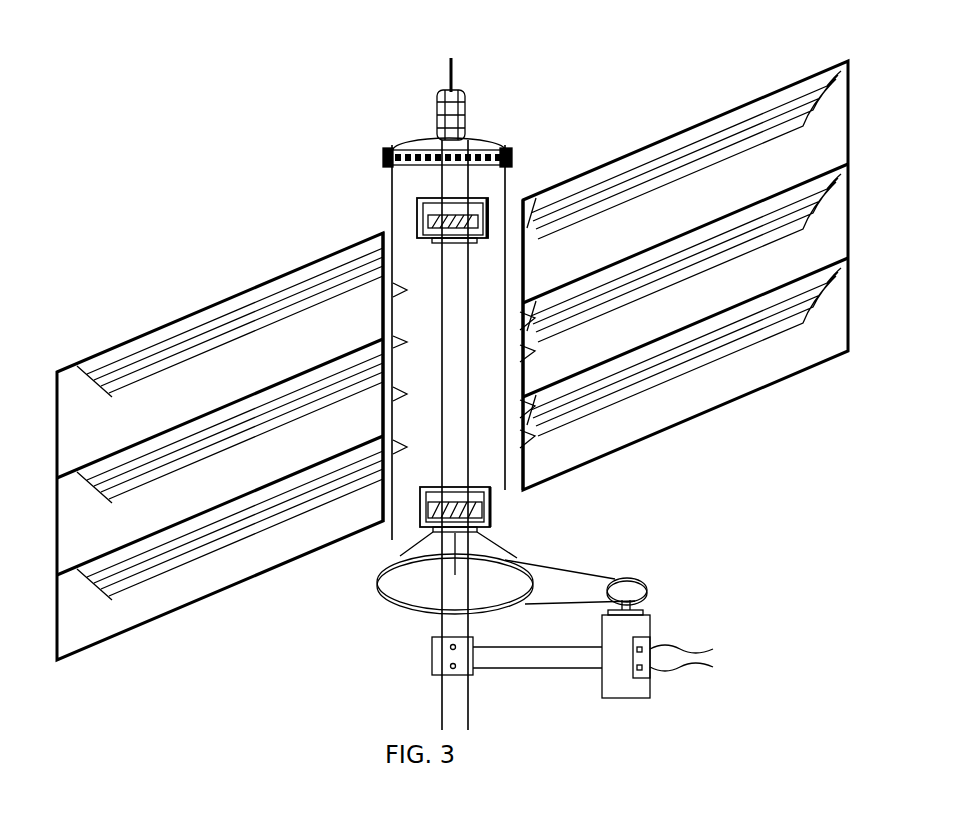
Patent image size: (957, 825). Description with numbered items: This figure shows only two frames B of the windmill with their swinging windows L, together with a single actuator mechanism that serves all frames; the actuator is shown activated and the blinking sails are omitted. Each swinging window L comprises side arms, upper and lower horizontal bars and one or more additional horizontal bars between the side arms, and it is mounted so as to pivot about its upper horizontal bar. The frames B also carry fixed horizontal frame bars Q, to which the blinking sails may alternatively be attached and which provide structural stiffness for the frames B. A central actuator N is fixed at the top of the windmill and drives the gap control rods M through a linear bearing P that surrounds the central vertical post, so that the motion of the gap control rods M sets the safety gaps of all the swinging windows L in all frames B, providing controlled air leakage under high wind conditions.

The actuator N is at (430, 118).
The linear bearing P is at (397, 164).
The horizontal frame bar Q is at (650, 338).
The swinging window L is at (610, 398).
The gap control rod M is at (400, 358).
The frame B is at (750, 395).